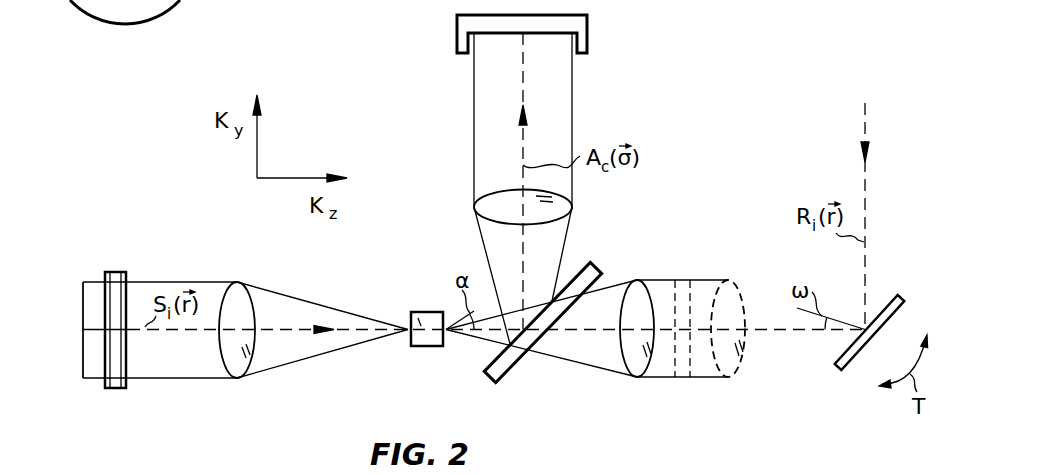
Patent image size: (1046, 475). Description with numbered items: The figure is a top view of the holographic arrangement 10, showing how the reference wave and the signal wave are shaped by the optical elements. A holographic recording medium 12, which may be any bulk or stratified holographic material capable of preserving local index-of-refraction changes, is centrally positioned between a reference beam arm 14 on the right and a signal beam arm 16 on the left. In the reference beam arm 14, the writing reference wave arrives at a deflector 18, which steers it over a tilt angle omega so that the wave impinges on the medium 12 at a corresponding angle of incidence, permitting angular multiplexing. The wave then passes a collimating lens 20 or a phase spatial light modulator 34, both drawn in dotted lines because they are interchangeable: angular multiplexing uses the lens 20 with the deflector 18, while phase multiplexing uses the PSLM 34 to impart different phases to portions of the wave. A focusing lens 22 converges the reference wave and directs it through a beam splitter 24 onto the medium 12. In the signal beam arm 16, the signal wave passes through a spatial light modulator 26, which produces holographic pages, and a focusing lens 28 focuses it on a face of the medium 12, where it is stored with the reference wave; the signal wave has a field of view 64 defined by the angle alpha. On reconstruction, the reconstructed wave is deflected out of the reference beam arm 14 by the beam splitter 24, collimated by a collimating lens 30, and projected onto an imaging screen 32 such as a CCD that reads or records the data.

The holographic arrangement 10 is at (719, 83).
The holographic recording medium 12 is at (419, 311).
The reference beam arm 14 is at (738, 210).
The signal beam arm 16 is at (167, 233).
The deflector 18 is at (833, 368).
The collimating lens 20 is at (725, 379).
The focusing lens 22 is at (637, 379).
The beam splitter 24 is at (606, 263).
The spatial light modulator 26 is at (113, 390).
The focusing lens 28 is at (237, 381).
The collimating lens 30 is at (474, 206).
The imaging screen 32 is at (589, 24).
The phase spatial light modulator 34 is at (676, 278).
The field of view 64 is at (82, 309).